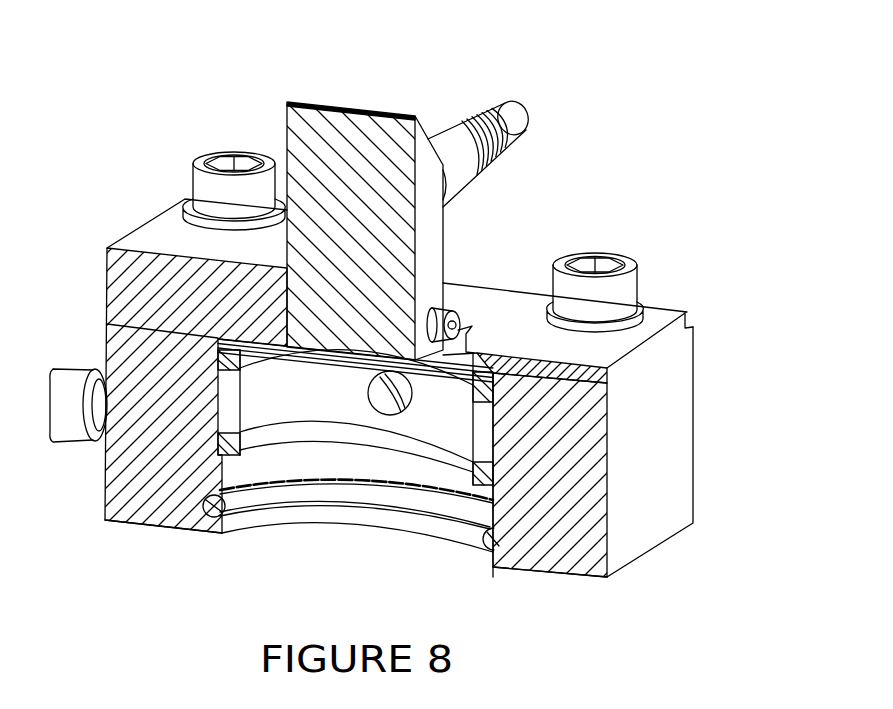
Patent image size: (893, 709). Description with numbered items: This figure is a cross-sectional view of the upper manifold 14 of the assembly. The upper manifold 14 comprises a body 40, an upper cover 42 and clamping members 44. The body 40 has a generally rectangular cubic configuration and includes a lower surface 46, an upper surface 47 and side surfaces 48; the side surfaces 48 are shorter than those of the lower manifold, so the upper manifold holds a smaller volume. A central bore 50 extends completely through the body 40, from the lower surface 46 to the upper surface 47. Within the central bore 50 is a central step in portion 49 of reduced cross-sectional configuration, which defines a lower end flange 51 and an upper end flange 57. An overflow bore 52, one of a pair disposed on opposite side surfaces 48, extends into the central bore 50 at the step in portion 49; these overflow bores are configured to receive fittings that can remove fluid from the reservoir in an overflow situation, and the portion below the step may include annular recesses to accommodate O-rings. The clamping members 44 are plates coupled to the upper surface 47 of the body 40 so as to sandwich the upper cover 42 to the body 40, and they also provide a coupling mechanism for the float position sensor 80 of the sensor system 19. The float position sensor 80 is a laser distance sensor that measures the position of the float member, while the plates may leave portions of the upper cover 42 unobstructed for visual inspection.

The upper manifold 14 is at (745, 322).
The sensor system 19 is at (508, 58).
The body 40 is at (702, 425).
The upper cover 42 is at (258, 368).
The clamping members 44 is at (668, 320).
The lower surface 46 is at (548, 574).
The upper surface 47 is at (578, 384).
The side surfaces 48 is at (678, 368).
The step in portion 49 is at (230, 400).
The central bore 50 is at (373, 542).
The lower end flange 51 is at (480, 466).
The overflow bore 52 is at (367, 392).
The upper end flange 57 is at (487, 400).
The float position sensor 80 is at (354, 100).